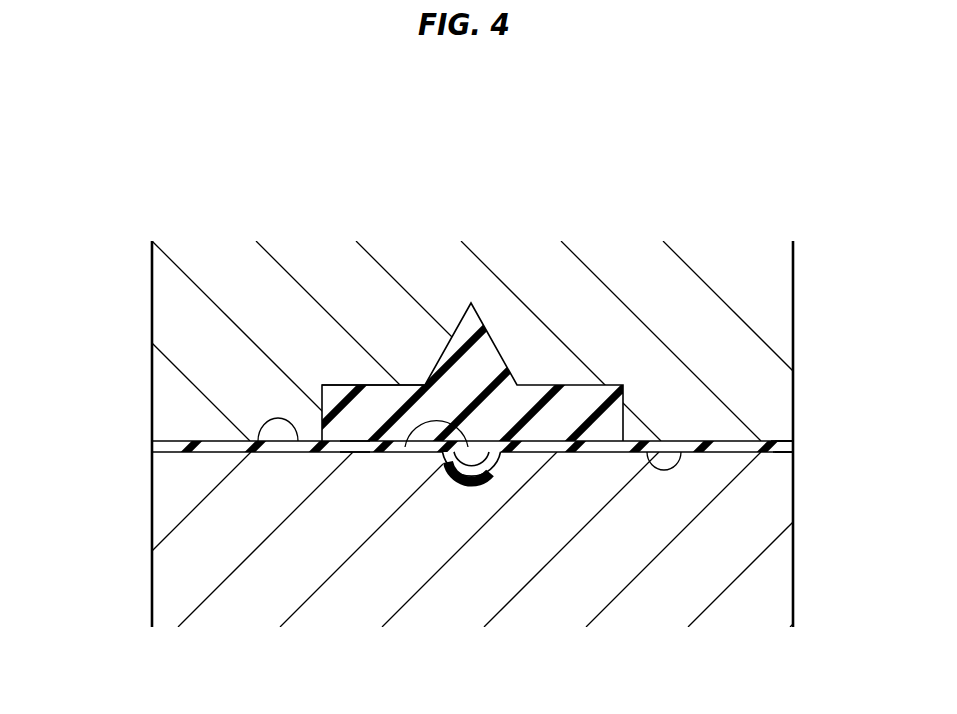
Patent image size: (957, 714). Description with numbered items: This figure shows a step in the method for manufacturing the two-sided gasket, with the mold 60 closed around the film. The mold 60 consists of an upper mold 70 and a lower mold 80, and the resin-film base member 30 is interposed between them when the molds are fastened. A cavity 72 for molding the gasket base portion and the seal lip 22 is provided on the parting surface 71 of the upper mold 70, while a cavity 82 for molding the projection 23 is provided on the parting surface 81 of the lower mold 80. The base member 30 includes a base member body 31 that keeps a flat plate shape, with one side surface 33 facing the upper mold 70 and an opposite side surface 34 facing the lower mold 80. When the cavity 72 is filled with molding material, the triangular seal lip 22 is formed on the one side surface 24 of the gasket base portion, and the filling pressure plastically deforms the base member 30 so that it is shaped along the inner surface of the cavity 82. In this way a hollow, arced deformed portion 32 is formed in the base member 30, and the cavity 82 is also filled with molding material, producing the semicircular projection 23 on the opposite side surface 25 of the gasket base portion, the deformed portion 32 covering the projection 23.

The mold 60 is at (151, 176).
The upper mold 70 is at (151, 294).
The lower mold 80 is at (152, 587).
The base member 30 is at (188, 435).
The seal lip 22 is at (480, 363).
The one side surface 24 is at (342, 385).
The cavity 72 is at (400, 385).
The parting surface 71 is at (681, 452).
The one side surface 33 is at (771, 441).
The base member body 31 is at (793, 443).
The opposite side surface 34 is at (773, 452).
The parting surface 81 is at (258, 441).
The opposite side surface 25 is at (354, 452).
The projection 23 is at (405, 447).
The cavity 82 is at (484, 466).
The deformed portion 32 is at (500, 468).